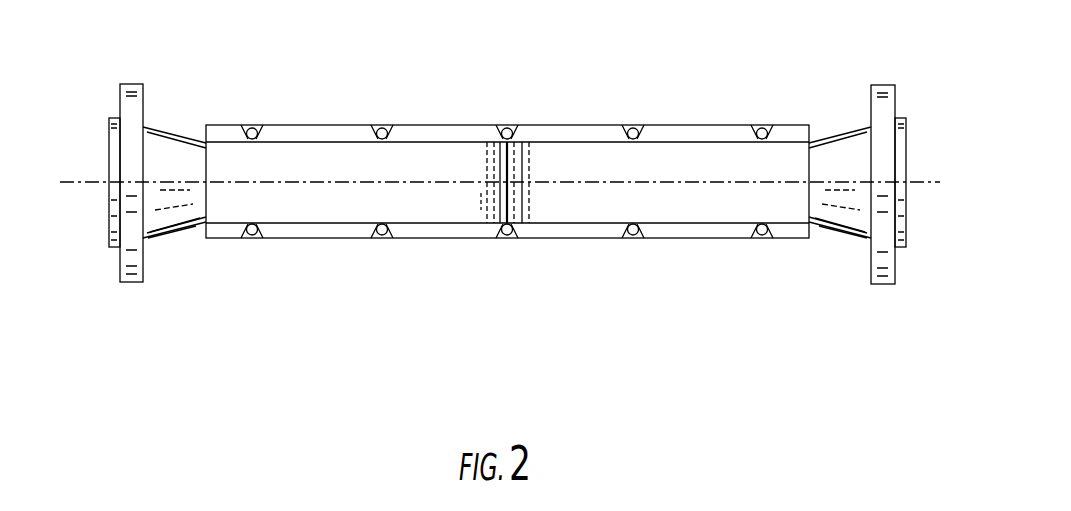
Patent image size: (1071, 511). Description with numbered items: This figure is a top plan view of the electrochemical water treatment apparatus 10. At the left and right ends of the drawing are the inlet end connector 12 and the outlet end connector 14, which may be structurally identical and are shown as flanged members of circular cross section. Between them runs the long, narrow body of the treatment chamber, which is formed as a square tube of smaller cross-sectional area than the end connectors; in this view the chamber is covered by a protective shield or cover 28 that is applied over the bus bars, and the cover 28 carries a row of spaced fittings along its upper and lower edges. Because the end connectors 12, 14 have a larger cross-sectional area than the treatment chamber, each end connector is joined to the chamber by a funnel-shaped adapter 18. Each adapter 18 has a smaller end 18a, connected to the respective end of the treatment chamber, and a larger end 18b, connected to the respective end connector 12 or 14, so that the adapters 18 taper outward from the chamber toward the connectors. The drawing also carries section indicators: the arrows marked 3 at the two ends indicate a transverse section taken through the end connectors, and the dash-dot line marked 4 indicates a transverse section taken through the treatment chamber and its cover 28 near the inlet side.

The water treatment apparatus 10 is at (503, 85).
The inlet end connector 12 is at (878, 122).
The outlet end connector 14 is at (132, 88).
The funnel-shaped adapter 18 is at (167, 213).
The smaller end 18a is at (188, 214).
The larger end 18b is at (157, 226).
The protective shield or cover 28 is at (357, 160).
The section line 3- 3 is at (60, 182).
The section line 4- 4 is at (321, 340).